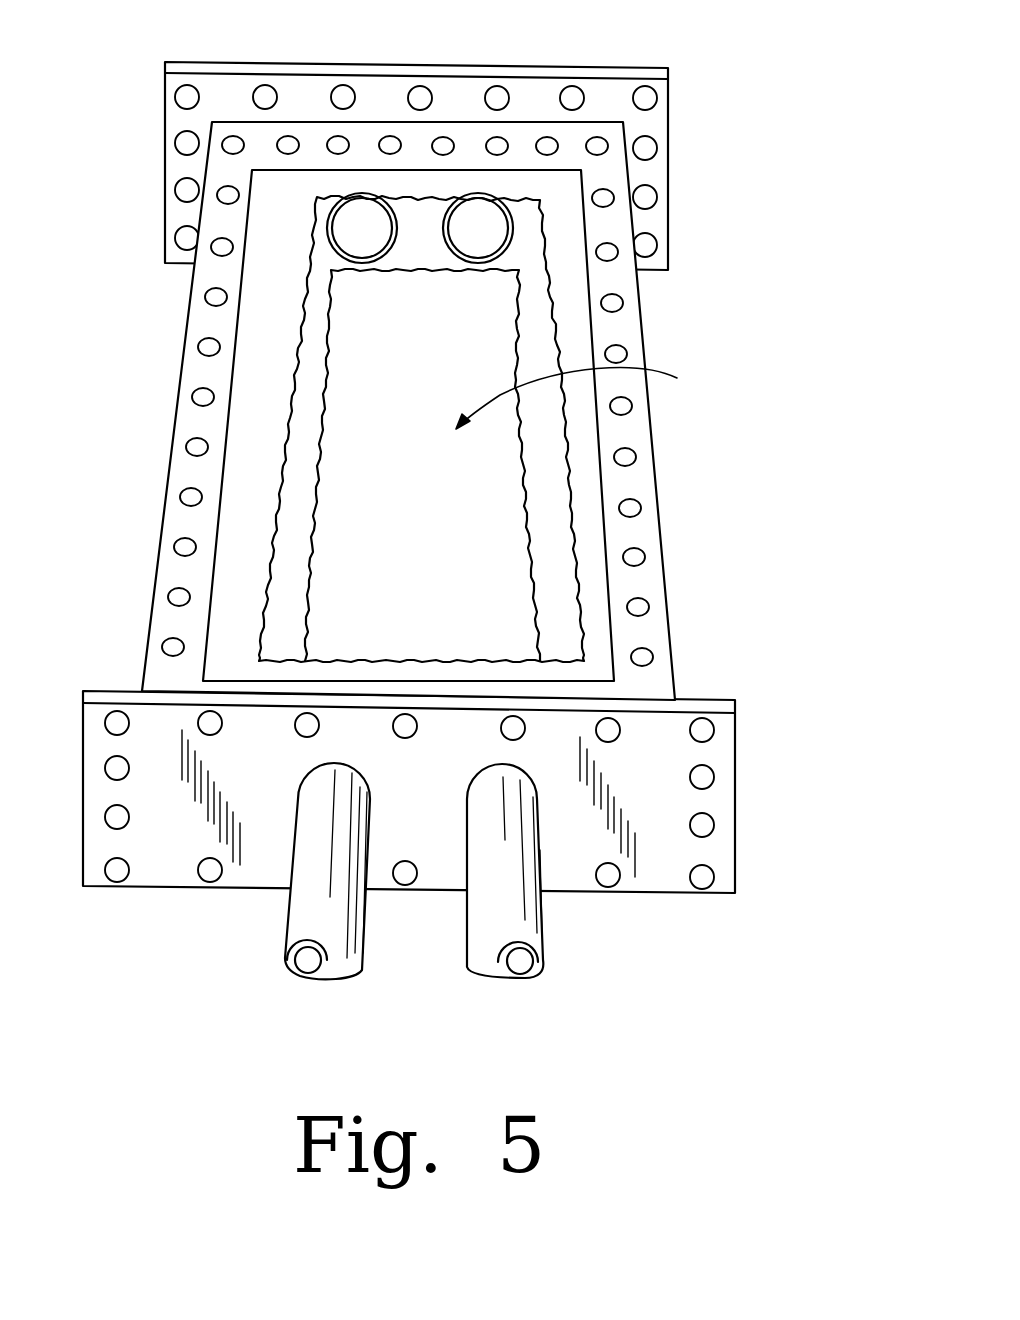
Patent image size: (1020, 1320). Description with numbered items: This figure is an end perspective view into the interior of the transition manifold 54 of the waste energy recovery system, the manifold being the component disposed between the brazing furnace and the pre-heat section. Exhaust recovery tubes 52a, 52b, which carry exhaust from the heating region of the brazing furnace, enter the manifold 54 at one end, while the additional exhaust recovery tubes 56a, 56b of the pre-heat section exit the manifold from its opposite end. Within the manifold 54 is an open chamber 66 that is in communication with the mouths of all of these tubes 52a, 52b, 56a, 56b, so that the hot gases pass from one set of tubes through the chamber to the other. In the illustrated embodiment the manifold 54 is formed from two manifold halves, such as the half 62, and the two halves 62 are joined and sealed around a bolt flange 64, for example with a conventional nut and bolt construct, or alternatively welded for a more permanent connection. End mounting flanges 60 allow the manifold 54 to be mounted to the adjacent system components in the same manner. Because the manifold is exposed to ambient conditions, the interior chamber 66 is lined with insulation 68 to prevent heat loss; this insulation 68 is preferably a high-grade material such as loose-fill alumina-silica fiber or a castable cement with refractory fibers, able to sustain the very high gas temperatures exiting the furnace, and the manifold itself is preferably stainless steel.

The exhaust recovery tube 52a is at (367, 212).
The exhaust recovery tube 52b is at (483, 212).
The transition manifold 54 is at (441, 411).
The exhaust recovery tube 56a is at (300, 910).
The exhaust recovery tube 56b is at (530, 910).
The end mounting flange 60 is at (607, 98).
The manifold half 62 is at (636, 470).
The bolt flange 64 is at (636, 530).
The open chamber 66 is at (588, 397).
The insulation 68 is at (306, 393).